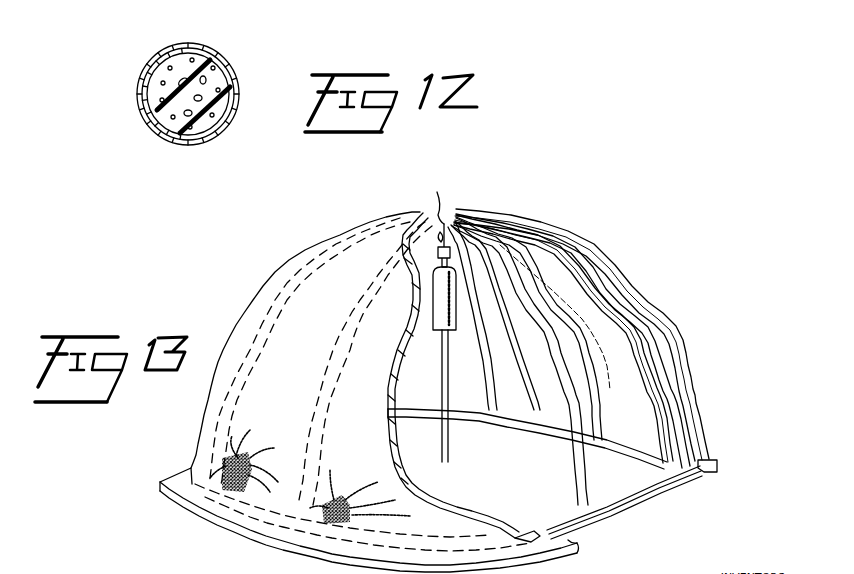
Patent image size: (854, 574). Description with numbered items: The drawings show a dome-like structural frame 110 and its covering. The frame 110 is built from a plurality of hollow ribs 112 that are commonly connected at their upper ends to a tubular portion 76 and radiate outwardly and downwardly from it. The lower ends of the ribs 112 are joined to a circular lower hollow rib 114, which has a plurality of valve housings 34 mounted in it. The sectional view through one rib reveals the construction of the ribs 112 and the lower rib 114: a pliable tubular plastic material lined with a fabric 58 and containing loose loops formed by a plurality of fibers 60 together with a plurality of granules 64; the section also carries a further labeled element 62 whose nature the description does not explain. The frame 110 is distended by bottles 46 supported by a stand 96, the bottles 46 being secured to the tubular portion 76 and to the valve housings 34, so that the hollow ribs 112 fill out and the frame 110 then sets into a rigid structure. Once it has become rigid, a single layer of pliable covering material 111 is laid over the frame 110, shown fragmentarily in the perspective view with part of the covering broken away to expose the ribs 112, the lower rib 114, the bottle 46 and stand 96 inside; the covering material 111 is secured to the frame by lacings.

In FIG. 13, the valve housing 34 is at (712, 463).
In FIG. 13, the bottle 46 is at (438, 312).
In FIG. 12, the fabric 58 is at (231, 95).
In FIG. 12, the fibers 60 is at (214, 128).
In FIG. 12, the conductor strip 62 is at (180, 62).
In FIG. 12, the granules 64 is at (170, 138).
In FIG. 13, the tubular portion 76 is at (434, 208).
In FIG. 13, the stand 96 is at (461, 458).
In FIG. 13, the structural frame 110 is at (610, 254).
In FIG. 13, the pliable covering material 111 is at (266, 292).
In FIG. 12, the hollow ribs 112 is at (231, 74).
In FIG. 13, the hollow ribs 112 is at (596, 379).
In FIG. 13, the circular lower hollow rib 114 is at (612, 504).